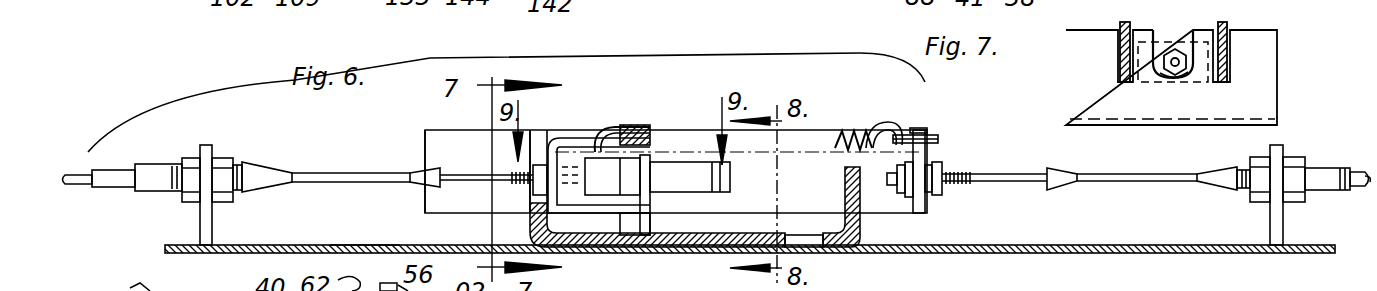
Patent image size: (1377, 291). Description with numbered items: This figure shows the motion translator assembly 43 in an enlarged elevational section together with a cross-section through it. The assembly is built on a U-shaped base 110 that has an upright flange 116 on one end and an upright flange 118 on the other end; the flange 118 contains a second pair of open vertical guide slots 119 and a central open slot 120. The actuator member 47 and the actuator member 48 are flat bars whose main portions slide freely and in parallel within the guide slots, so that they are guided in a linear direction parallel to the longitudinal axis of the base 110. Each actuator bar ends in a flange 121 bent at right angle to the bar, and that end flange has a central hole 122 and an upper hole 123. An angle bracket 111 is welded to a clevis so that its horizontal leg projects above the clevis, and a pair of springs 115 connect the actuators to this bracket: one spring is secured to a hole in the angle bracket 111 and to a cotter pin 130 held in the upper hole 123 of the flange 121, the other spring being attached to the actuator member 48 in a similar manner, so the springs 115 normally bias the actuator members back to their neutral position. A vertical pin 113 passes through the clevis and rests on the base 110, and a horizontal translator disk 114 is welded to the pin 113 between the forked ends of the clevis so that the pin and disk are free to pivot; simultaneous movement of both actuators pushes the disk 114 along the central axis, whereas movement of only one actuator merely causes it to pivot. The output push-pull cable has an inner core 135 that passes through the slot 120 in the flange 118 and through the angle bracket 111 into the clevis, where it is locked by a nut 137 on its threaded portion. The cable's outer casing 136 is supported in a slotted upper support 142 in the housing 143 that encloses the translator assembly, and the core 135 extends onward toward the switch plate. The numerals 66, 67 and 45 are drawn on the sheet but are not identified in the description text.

In FIG. 6, the outer casing 136 is at (348, 133).
In FIG. 6, the slotted upper support 142 is at (214, 222).
In FIG. 6, the housing 143 is at (377, 218).
In FIG. 6, the inner core 135 is at (463, 220).
In FIG. 7, the inner core 135 is at (1183, 70).
In FIG. 6, the nut 137 is at (522, 188).
In FIG. 7, the nut 137 is at (1165, 73).
In FIG. 6, the central open slot 120 is at (543, 132).
In FIG. 7, the central open slot 120 is at (1156, 30).
In FIG. 6, the angle bracket 111 is at (567, 140).
In FIG. 7, the angle bracket 111 is at (1174, 46).
In FIG. 6, the vertical pin 113 is at (640, 130).
In FIG. 6, the actuator member 48 is at (661, 125).
In FIG. 7, the actuator member 48 is at (1122, 23).
In FIG. 6, the motion translator assembly 43 is at (687, 124).
In FIG. 6, the springs 115 is at (868, 128).
In FIG. 6, the upper hole 123 is at (927, 111).
In FIG. 6, the cotter pin 130 is at (934, 137).
In FIG. 6, the flange 121 is at (928, 147).
In FIG. 6, the U-shaped base 110 is at (836, 222).
In FIG. 7, the U-shaped base 110 is at (1098, 128).
In FIG. 6, the upright flange 116 is at (863, 233).
In FIG. 6, the central hole 122 is at (924, 201).
In FIG. 6, the cable core 66 is at (980, 187).
In FIG. 6, the cable casing 67 is at (1105, 186).
In FIG. 6, the upright flange 118 is at (540, 253).
In FIG. 7, the upright flange 118 is at (1284, 69).
In FIG. 6, the horizontal translator disk 114 is at (657, 252).
In FIG. 6, the cable end fitting 45 is at (1326, 168).
In FIG. 7, the actuator member 47 is at (1227, 23).
In FIG. 7, the open vertical guide slots 119 is at (1110, 43).